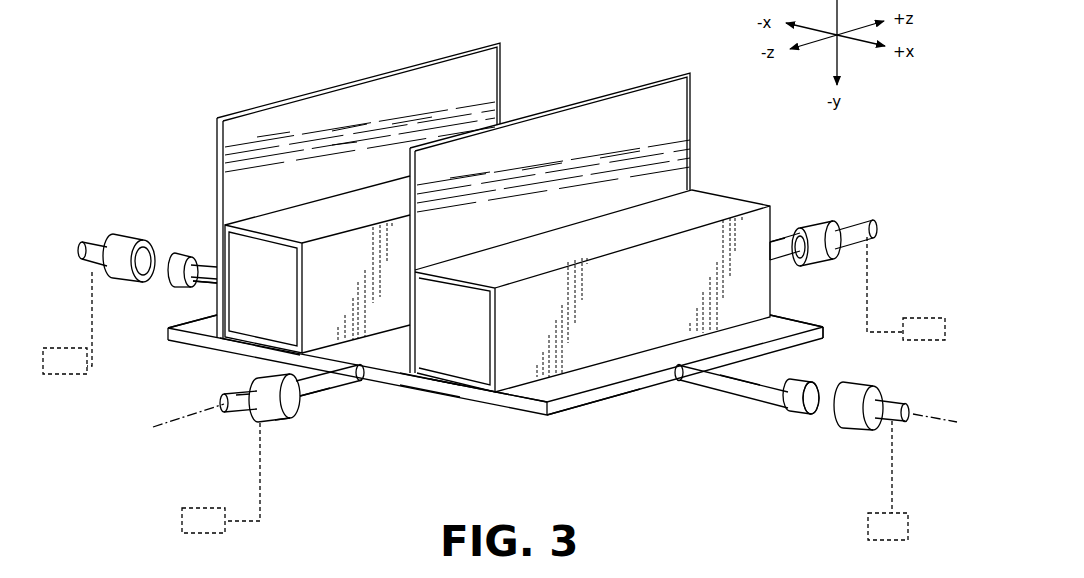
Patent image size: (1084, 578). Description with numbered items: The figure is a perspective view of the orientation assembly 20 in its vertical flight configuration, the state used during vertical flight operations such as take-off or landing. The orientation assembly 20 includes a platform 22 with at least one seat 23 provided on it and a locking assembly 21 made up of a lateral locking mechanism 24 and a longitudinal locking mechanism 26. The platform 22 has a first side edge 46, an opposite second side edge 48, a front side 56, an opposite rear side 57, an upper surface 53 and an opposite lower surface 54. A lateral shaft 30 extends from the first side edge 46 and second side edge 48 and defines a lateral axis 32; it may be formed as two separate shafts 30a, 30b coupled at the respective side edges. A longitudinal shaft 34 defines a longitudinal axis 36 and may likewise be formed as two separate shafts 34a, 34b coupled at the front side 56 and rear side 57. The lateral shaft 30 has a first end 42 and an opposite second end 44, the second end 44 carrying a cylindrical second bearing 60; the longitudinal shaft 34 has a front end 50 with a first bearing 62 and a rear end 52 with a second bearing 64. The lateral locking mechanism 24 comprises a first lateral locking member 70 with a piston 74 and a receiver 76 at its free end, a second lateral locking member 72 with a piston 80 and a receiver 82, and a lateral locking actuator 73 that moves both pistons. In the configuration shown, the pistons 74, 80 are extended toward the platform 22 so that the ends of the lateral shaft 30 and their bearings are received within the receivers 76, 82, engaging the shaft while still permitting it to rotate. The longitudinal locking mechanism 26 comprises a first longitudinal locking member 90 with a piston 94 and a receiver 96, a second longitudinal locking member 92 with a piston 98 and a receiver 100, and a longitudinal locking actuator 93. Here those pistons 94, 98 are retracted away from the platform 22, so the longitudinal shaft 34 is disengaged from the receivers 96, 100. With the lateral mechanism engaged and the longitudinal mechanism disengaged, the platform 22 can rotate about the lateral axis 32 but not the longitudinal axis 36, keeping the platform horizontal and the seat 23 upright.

The orientation assembly 20 is at (703, 114).
The locking assembly 21 is at (287, 440).
The platform 22 is at (547, 430).
The seat 23 is at (323, 80).
The lateral locking mechanism 24 is at (554, 323).
The longitudinal locking mechanism 26 is at (100, 225).
The lateral shaft 30 is at (341, 390).
The shaft 30a is at (318, 401).
The shaft 30b is at (783, 232).
The lateral axis 32 is at (183, 426).
The longitudinal shaft 34 is at (198, 248).
The shaft 34a is at (740, 388).
The shaft 34b is at (208, 285).
The longitudinal axis 36 is at (920, 416).
The first end 42 is at (283, 367).
The second end 44 is at (788, 260).
The first side edge 46 is at (440, 400).
The second side edge 48 is at (808, 322).
The front end 50 is at (782, 402).
The rear end 52 is at (203, 263).
The upper surface 53 is at (478, 420).
The lower surface 54 is at (438, 440).
The front side 56 is at (575, 407).
The rear side 57 is at (183, 317).
The second bearing 60 is at (791, 250).
The first bearing 62 is at (810, 378).
The second bearing 64 is at (176, 250).
The first lateral locking member 70 is at (298, 404).
The second lateral locking member 72 is at (846, 262).
The lateral locking actuator 73 is at (182, 522).
The piston 74 is at (240, 417).
The receiver 76 is at (247, 391).
The piston 80 is at (868, 212).
The receiver 82 is at (820, 222).
The first longitudinal locking member 90 is at (895, 393).
The second longitudinal locking member 92 is at (92, 270).
The longitudinal locking actuator 93 is at (68, 374).
The piston 94 is at (910, 404).
The receiver 96 is at (835, 411).
The piston 98 is at (80, 244).
The receiver 100 is at (134, 236).